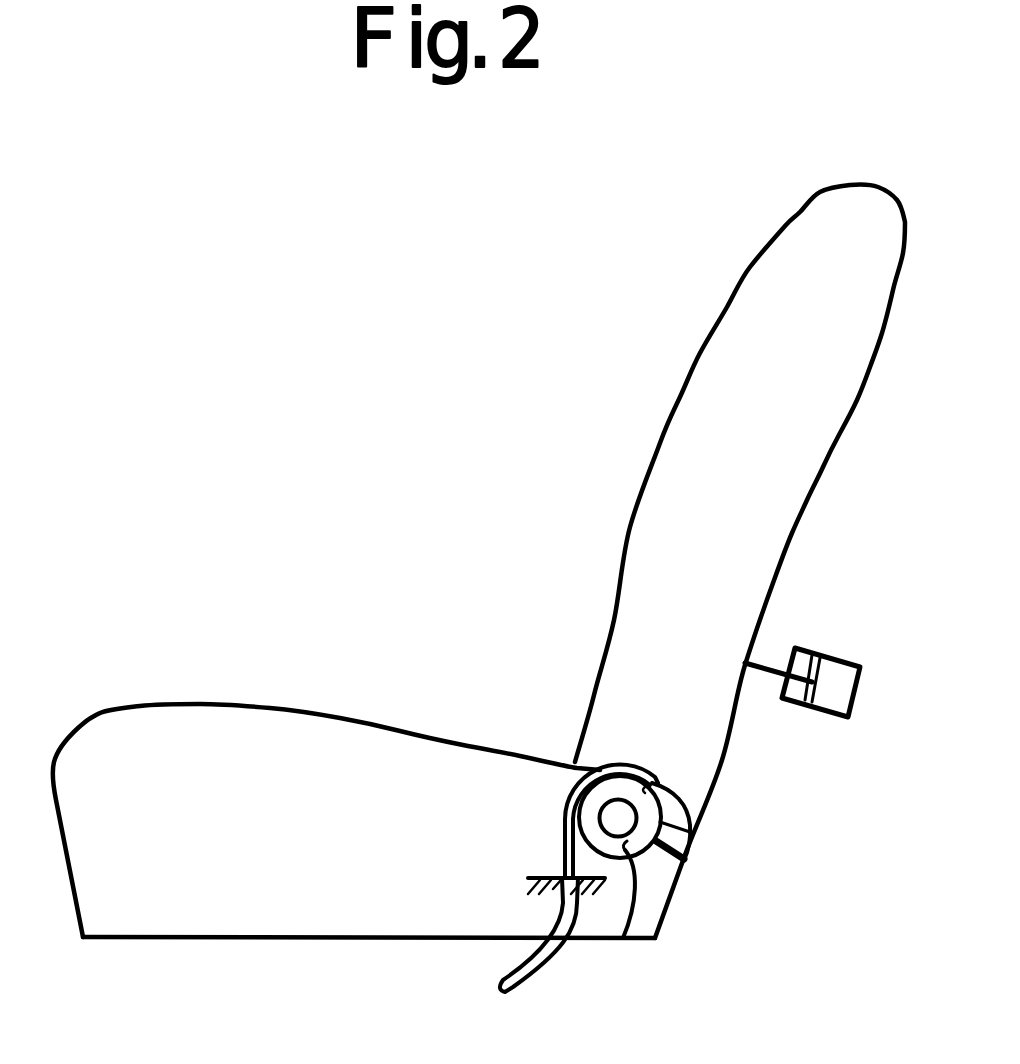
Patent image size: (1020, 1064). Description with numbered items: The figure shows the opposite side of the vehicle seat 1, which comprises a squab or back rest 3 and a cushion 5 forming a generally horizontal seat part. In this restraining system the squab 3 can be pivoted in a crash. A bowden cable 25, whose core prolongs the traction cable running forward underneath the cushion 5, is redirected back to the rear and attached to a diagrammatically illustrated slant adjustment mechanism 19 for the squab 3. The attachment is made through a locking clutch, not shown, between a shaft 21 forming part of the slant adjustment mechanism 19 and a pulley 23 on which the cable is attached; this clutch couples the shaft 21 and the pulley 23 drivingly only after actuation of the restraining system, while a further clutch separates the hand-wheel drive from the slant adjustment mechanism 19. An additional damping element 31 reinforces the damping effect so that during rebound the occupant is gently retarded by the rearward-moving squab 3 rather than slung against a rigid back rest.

The vehicle seat 1 is at (545, 274).
The squab 3 is at (800, 420).
The cushion 5 is at (280, 752).
The slant adjustment mechanism 19 is at (684, 859).
The shaft 21 is at (628, 826).
The pulley 23 is at (623, 938).
The bowden cable 25 is at (536, 976).
The additional damping element 31 is at (847, 664).